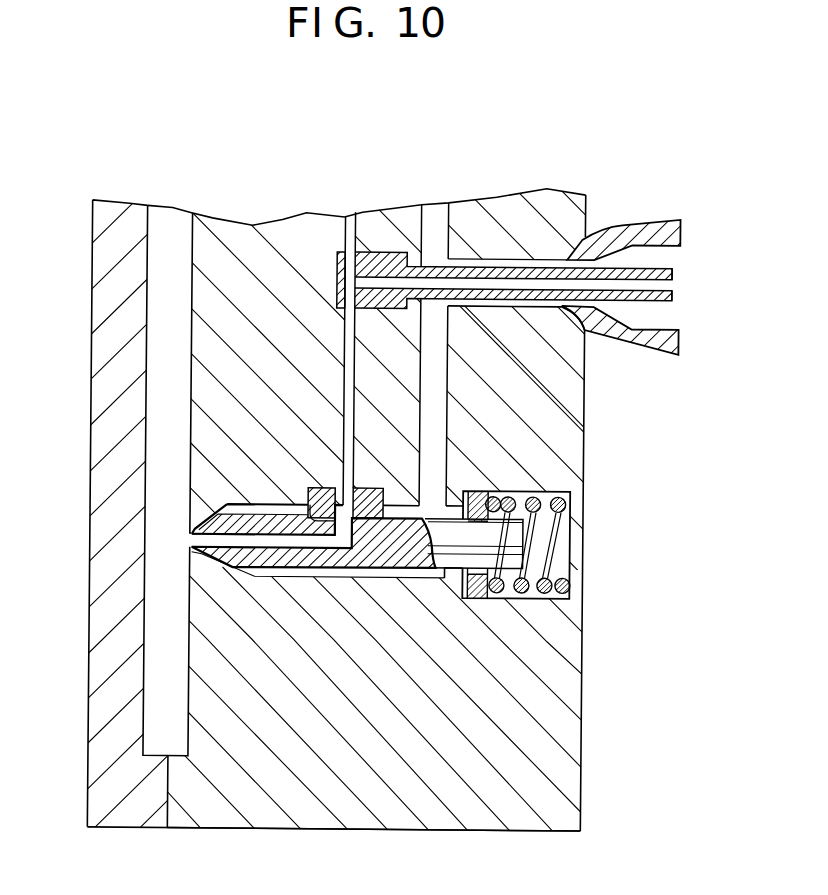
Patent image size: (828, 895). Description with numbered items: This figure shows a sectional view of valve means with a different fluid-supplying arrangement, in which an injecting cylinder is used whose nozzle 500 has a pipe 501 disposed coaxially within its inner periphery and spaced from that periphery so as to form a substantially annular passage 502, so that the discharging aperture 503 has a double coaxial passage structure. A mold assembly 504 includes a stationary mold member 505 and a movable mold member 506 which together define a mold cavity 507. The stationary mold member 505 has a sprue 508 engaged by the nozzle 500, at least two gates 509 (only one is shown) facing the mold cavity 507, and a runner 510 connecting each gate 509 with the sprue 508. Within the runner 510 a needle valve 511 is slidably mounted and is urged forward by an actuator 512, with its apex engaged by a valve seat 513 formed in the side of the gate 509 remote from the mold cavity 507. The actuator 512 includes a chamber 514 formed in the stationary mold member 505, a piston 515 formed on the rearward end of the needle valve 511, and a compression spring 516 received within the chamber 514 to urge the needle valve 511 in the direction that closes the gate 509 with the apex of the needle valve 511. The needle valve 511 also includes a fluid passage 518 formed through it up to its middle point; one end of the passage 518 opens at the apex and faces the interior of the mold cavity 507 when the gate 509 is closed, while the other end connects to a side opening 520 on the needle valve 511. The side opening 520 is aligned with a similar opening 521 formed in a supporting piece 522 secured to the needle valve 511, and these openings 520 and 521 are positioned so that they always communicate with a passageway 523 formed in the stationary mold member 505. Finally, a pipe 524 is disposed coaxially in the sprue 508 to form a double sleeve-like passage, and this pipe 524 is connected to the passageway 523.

The nozzle 500 is at (624, 228).
The pipe 501 is at (668, 280).
The annular passage 502 is at (676, 250).
The discharging aperture 503 is at (582, 304).
The mold assembly 504 is at (337, 831).
The stationary mold member 505 is at (575, 696).
The movable mold member 506 is at (90, 675).
The mold cavity 507 is at (182, 430).
The sprue 508 is at (483, 256).
The gate 509 is at (192, 548).
The runner 510 is at (441, 412).
The needle valve 511 is at (307, 562).
The actuator 512 is at (568, 536).
The valve seat 513 is at (198, 522).
The chamber 514 is at (565, 550).
The piston 515 is at (475, 575).
The compression spring 516 is at (567, 585).
The fluid passage 518 is at (246, 548).
The side opening 520 is at (309, 503).
The opening 521 is at (348, 510).
The supporting piece 522 is at (320, 487).
The passageway 523 is at (354, 430).
The pipe 524 is at (493, 293).